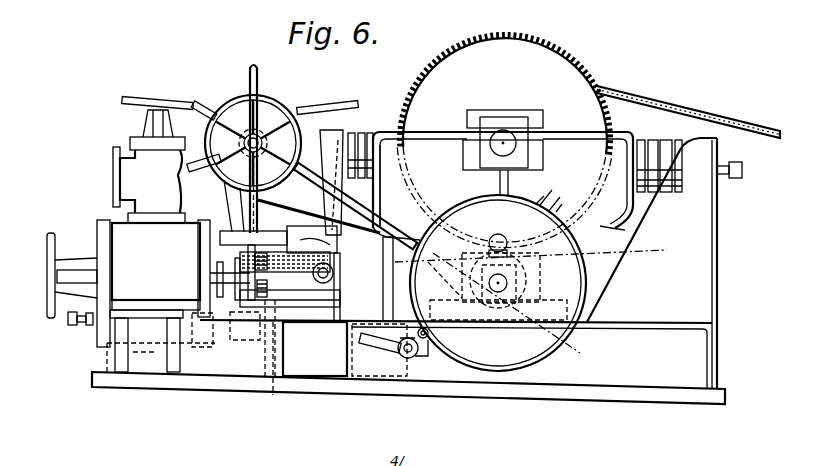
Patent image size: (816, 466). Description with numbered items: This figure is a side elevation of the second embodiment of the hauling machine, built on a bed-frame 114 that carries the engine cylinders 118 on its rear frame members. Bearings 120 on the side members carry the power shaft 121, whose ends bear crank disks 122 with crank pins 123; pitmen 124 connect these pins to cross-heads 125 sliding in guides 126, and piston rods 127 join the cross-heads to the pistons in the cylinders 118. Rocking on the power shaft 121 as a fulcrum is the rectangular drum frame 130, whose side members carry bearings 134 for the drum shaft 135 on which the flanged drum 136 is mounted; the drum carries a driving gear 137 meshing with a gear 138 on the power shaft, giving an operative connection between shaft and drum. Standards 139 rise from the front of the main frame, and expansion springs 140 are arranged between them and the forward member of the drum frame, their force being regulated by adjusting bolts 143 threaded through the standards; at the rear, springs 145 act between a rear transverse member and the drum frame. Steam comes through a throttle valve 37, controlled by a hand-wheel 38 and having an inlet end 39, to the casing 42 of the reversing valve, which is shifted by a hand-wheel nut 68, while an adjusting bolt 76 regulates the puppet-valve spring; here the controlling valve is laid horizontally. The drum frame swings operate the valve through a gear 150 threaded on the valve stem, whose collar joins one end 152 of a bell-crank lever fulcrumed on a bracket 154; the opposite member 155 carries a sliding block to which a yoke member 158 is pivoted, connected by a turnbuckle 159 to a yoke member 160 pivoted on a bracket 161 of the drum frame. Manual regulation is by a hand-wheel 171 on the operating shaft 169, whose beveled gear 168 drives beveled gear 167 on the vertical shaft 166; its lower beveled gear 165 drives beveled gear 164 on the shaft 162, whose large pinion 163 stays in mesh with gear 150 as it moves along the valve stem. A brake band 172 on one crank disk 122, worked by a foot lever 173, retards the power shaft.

The throttle valve 37 is at (137, 170).
The hand-wheel 38 is at (143, 100).
The inlet end 39 is at (113, 162).
The casing 42 is at (158, 355).
The hand-wheel nut 68 is at (48, 246).
The adjusting bolt 76 is at (71, 328).
The bed-frame 114 is at (603, 398).
The engine cylinders 118 is at (173, 283).
The bearings 120 is at (590, 302).
The power shaft 121 is at (498, 293).
The crank disks 122 is at (580, 276).
The crank pins 123 is at (516, 224).
The pitmen 124 is at (441, 264).
The cross-heads 125 is at (285, 236).
The guides 126 is at (405, 210).
The piston rods 127 is at (277, 283).
The rectangular frame 130 is at (593, 230).
The bearings 134 is at (520, 100).
The drum shaft 135 is at (536, 152).
The flanged drum 136 is at (560, 76).
The driving gear 137 is at (473, 35).
The gear 138 is at (547, 340).
The standards 139 is at (713, 138).
The expansion springs 140 is at (672, 128).
The adjusting bolt 143 is at (750, 156).
The springs 145 is at (352, 133).
The gear 150 is at (277, 369).
The end of bell-crank lever 152 is at (200, 302).
The bracket 154 is at (319, 209).
The member of bell-crank lever 155 is at (486, 302).
The yoke member 158 is at (338, 262).
The turnbuckle 159 is at (373, 200).
The yoke member 160 is at (344, 134).
The bracket 161 is at (370, 190).
The shaft 162 is at (308, 293).
The large pinion 163 is at (284, 322).
The beveled gear 164 is at (262, 325).
The beveled gear 165 is at (232, 336).
The vertical shaft 166 is at (244, 224).
The beveled gear 167 is at (214, 124).
The beveled gear 168 is at (258, 128).
The operating shaft 169 is at (249, 107).
The hand-wheel 171 is at (262, 67).
The brake band 172 is at (532, 373).
The foot lever 173 is at (363, 340).